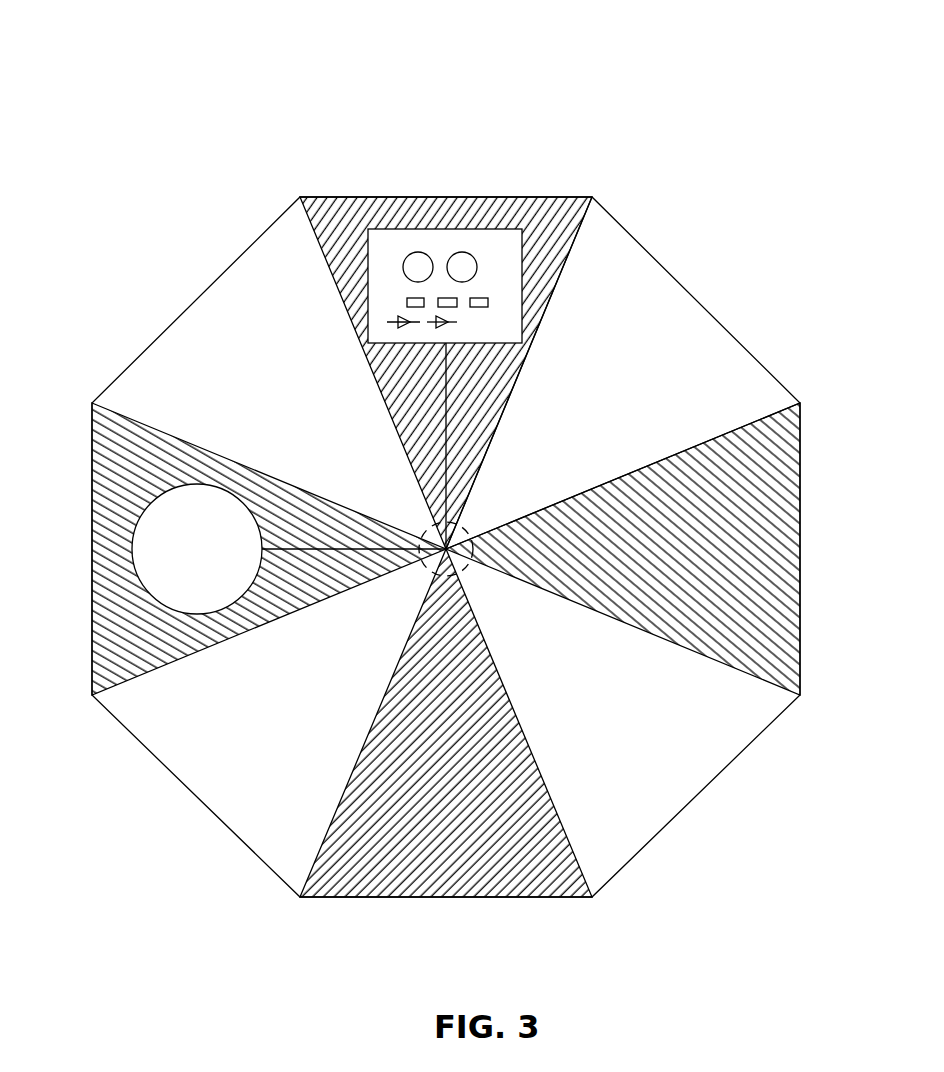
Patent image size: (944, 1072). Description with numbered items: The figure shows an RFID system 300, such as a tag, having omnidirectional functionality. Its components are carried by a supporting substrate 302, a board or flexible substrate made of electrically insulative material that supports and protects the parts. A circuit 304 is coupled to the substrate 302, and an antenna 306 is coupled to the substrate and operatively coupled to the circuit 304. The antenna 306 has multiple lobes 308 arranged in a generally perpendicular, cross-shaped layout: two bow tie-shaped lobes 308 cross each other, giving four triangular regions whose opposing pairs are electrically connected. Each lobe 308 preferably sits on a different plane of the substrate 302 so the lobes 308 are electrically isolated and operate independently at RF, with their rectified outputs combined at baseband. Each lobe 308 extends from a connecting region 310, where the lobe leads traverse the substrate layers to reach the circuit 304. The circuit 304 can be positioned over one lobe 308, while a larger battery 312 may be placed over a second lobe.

The RFID system 300 is at (215, 118).
The supporting substrate 302 is at (205, 290).
The circuit 304 is at (463, 229).
The antenna 306 is at (748, 380).
The lobes 308 is at (780, 550).
The connecting region 310 is at (467, 572).
The battery 312 is at (165, 480).